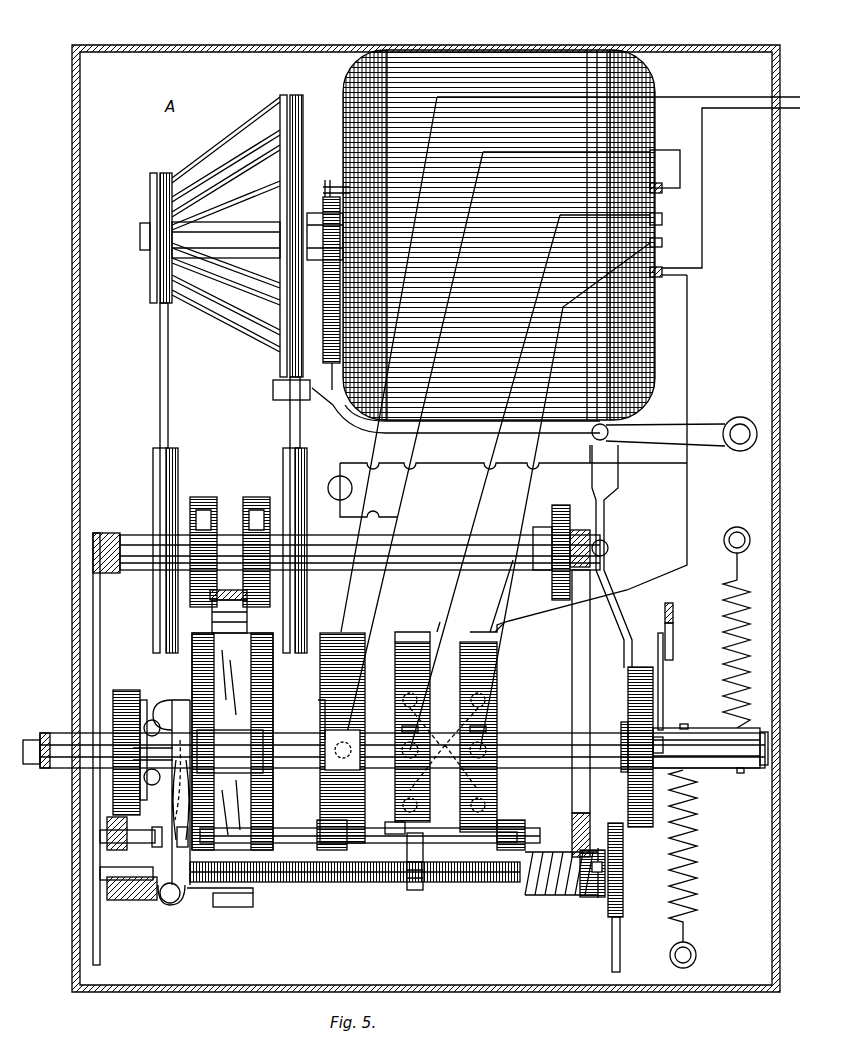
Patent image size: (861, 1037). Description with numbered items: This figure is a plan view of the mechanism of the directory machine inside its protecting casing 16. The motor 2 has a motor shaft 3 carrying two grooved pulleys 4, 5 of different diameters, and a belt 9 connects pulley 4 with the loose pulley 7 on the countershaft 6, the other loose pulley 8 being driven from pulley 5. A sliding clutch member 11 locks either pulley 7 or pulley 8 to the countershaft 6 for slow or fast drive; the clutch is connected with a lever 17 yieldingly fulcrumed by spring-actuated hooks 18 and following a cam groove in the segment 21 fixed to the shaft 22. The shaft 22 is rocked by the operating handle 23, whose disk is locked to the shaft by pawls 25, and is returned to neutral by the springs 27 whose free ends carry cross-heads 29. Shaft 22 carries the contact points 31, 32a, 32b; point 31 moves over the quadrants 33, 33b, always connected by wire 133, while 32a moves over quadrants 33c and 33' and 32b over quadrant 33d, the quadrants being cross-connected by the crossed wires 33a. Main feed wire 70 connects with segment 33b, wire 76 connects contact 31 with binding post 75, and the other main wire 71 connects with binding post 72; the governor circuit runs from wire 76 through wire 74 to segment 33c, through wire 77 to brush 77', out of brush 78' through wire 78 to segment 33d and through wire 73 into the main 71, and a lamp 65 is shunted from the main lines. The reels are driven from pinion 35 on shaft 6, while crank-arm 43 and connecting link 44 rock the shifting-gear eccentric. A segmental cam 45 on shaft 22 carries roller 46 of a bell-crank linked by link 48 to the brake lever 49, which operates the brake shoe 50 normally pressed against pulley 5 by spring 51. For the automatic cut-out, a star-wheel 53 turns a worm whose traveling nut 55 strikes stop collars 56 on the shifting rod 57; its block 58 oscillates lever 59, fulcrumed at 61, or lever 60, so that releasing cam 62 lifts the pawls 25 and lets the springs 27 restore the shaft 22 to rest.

The motor 2 is at (499, 235).
The motor shaft 3 is at (262, 248).
The grooved pulley 4 is at (150, 300).
The grooved pulley 5 is at (280, 332).
The countershaft 6 is at (428, 546).
The loose pulley 7 is at (153, 470).
The loose pulley 8 is at (283, 460).
The belt 9 is at (160, 402).
The sliding clutch member 11 is at (205, 512).
The protecting casing 16 is at (74, 270).
The lever 17 is at (212, 616).
The spring-actuated hooks 18 is at (207, 895).
The segment 21 is at (232, 741).
The shaft 22 is at (402, 757).
The operating lever or handle 23 is at (50, 735).
The pawls 25 is at (150, 772).
The springs 27 is at (724, 644).
The cross-heads 29 is at (686, 728).
The switch contact point 31 is at (335, 745).
The switch contact point 32a is at (402, 738).
The switch contact point 32b is at (486, 742).
The contact quadrant 33 is at (387, 807).
The contact quadrant 33' is at (388, 819).
The crossed wire 33a is at (445, 740).
The contact quadrant 33b is at (379, 738).
The contact quadrant 33c is at (398, 666).
The contact quadrant 33d is at (482, 680).
The pinion 35 is at (558, 508).
The crank-arm 43 is at (660, 708).
The connecting link 44 is at (674, 628).
The segmental cam 45 is at (650, 830).
The roller 46 is at (630, 748).
The link 48 is at (604, 528).
The brake lever 49 is at (708, 424).
The friction brake shoe 50 is at (273, 398).
The spring 51 is at (322, 318).
The star-wheel 53 is at (620, 952).
The traveling nut 55 is at (415, 890).
The stop collars 56 is at (318, 858).
The shifting rod 57 is at (380, 845).
The block 58 is at (150, 842).
The lever 59 is at (186, 720).
The lever 60 is at (135, 805).
The fulcrum 61 is at (165, 902).
The releasing cam 62 is at (165, 700).
The lamp 65 is at (338, 476).
The main feed wire 70 is at (665, 96).
The main feed wire 71 is at (704, 162).
The binding post 72 is at (664, 284).
The wire 73 is at (685, 570).
The wire 74 is at (396, 628).
The binding post 75 is at (662, 177).
The wire 76 is at (660, 150).
The reverse wire 77 is at (458, 608).
The governor brush 77' is at (550, 477).
The reverse wire 78 is at (519, 468).
The governor brush 78' is at (585, 493).
The wire 133 is at (322, 712).